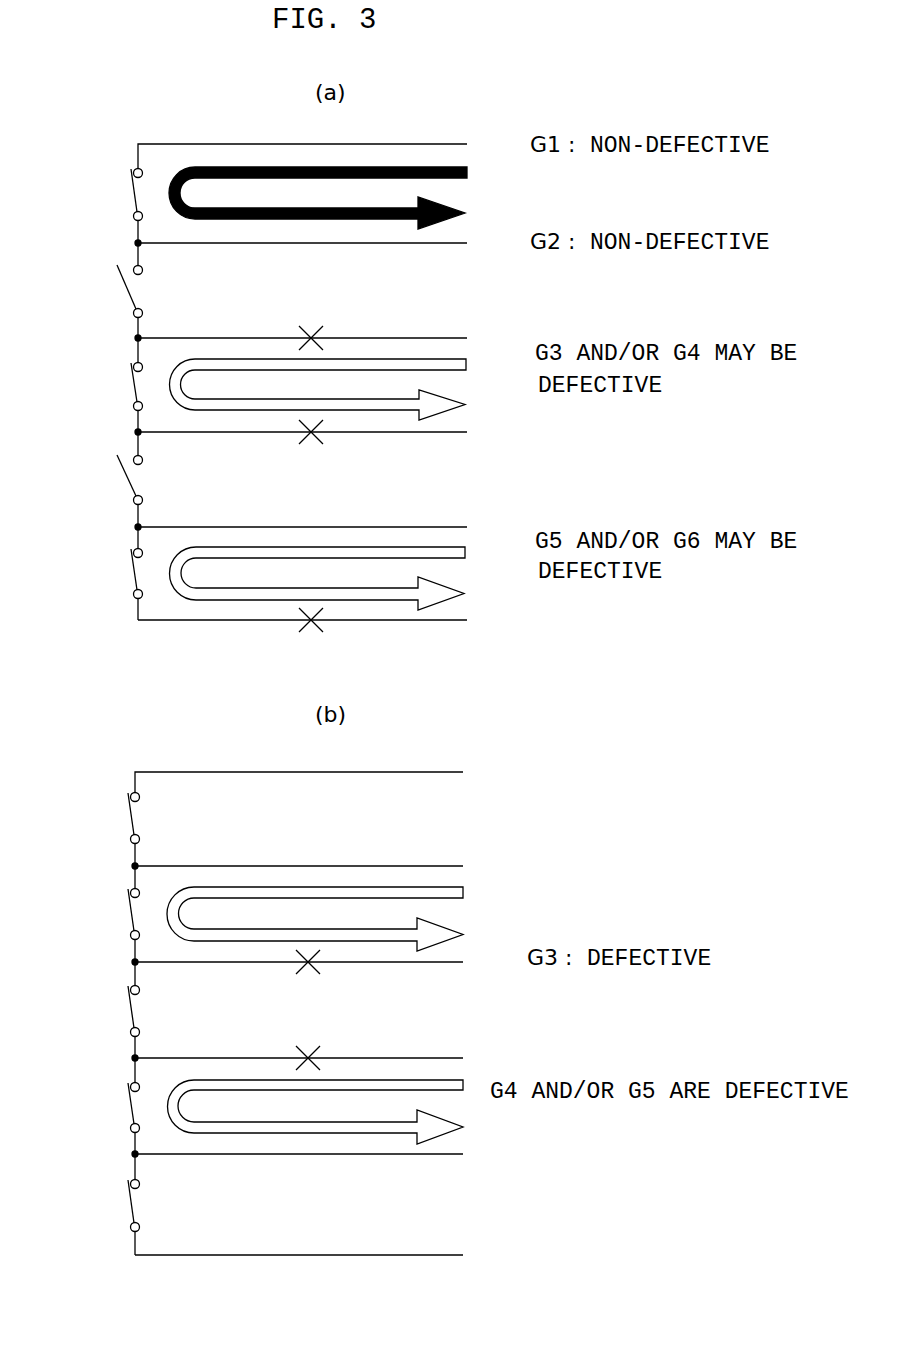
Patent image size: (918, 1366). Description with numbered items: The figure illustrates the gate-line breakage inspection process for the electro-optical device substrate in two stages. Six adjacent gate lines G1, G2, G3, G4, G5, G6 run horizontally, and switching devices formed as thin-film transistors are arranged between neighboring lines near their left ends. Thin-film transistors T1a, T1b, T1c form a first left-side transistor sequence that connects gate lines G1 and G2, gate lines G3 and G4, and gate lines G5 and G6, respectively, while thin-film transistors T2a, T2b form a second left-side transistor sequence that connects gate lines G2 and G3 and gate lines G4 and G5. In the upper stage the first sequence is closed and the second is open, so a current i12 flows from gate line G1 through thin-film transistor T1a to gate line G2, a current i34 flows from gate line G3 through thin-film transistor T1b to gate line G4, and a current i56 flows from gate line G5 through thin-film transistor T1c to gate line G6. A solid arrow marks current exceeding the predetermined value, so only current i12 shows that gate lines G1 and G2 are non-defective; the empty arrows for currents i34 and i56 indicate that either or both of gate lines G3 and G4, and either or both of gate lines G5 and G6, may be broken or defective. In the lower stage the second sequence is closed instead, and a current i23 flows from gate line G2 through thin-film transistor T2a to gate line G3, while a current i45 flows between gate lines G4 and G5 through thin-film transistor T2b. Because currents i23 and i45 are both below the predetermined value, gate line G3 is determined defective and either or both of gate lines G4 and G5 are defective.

The gate line G1 is at (266, 462).
The gate line G2 is at (266, 559).
The gate line G3 is at (266, 656).
The gate line G4 is at (266, 751).
The gate line G5 is at (266, 847).
The gate line G6 is at (266, 938).
The thin-film transistor T1a is at (109, 518).
The thin-film transistor T1b is at (109, 711).
The thin-film transistor T1c is at (109, 902).
The thin-film transistor T2a is at (134, 613).
The thin-film transistor T2b is at (134, 804).
The current i12 is at (340, 198).
The current i34 is at (341, 389).
The current i56 is at (339, 578).
The current i23 is at (337, 919).
The current i45 is at (338, 1112).